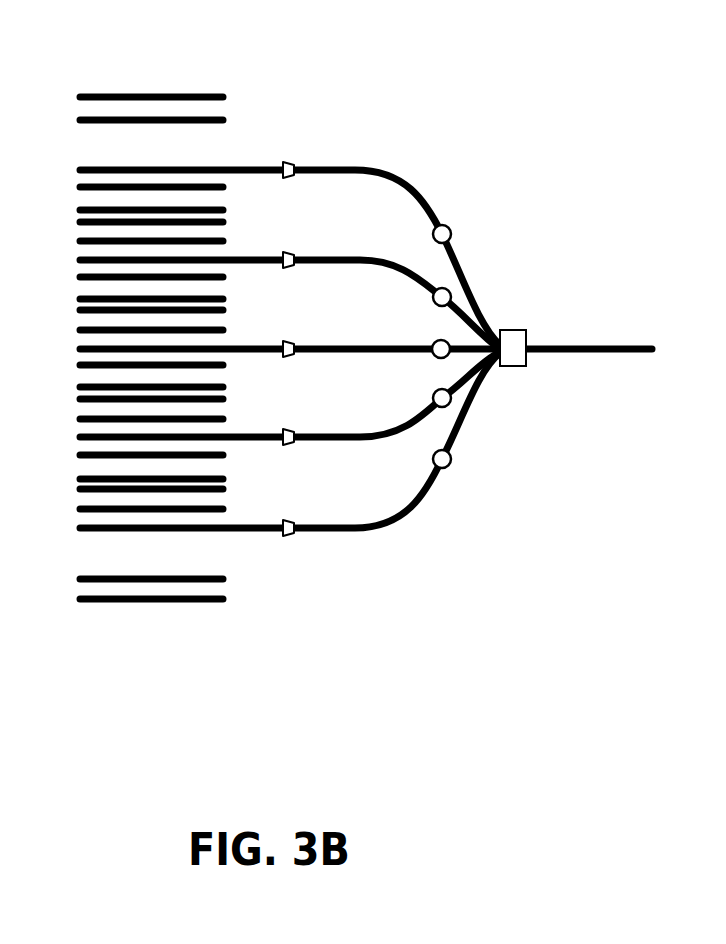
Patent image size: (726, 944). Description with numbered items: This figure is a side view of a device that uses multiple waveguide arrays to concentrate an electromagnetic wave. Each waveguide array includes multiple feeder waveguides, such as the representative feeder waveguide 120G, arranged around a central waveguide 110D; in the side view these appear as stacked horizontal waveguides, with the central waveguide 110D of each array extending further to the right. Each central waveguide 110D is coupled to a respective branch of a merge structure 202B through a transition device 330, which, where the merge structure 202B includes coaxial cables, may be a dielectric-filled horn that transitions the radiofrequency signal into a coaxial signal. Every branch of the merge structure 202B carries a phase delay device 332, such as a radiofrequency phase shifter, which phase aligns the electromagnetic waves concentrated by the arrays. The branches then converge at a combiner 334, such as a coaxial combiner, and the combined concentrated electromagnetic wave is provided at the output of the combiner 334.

The feeder waveguide 120G is at (117, 97).
The central waveguide 110D is at (227, 167).
The transition device 330 is at (296, 163).
The phase delay device 332 is at (448, 228).
The combiner 334 is at (515, 329).
The merge structure 202B is at (462, 536).